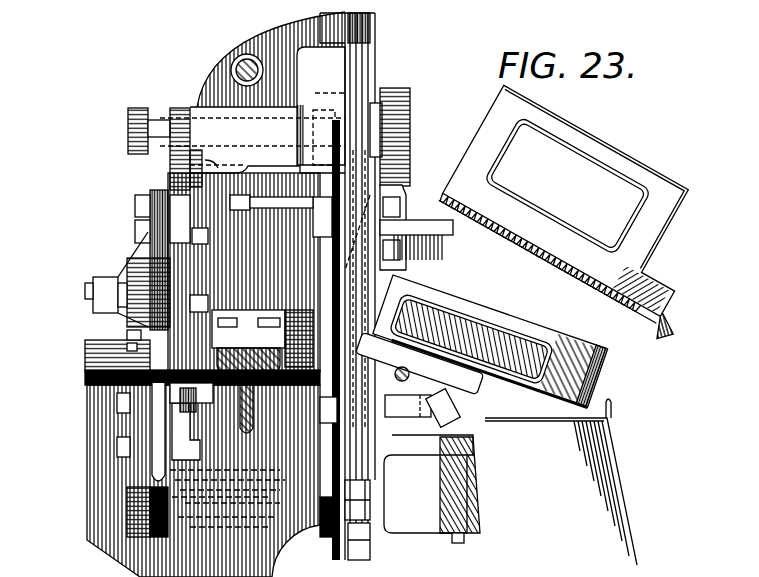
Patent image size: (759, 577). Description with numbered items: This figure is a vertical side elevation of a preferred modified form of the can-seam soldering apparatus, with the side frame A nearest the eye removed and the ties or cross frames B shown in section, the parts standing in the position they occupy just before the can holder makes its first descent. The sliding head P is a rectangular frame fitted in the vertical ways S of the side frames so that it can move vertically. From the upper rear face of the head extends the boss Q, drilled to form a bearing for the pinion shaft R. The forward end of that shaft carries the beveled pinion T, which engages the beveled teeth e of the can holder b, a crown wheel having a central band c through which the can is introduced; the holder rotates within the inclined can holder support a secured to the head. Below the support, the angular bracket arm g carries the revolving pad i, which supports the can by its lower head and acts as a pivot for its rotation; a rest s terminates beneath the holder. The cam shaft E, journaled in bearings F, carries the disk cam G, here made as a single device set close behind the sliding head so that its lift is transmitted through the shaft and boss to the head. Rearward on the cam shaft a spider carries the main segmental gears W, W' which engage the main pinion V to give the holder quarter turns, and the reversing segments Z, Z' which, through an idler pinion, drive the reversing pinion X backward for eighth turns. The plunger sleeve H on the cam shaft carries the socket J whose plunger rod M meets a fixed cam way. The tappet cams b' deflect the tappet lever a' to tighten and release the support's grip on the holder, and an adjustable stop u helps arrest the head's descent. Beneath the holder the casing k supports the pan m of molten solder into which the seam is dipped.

The side frame A is at (267, 88).
The ties or cross frames B is at (259, 58).
The vertical ways S is at (372, 32).
The sliding head P is at (376, 68).
The beveled pinion T is at (410, 118).
The pinion shaft R is at (252, 129).
The boss Q is at (229, 157).
The main pinion V is at (149, 120).
The reversing pinion X is at (180, 138).
The gear hub Y' is at (176, 168).
The reversing segment Z' is at (179, 219).
The reversing segment Z is at (281, 212).
The tappet lever a' is at (244, 213).
The main segmental gear W is at (134, 338).
The main segmental gear W' is at (144, 527).
The plunger rod M is at (86, 289).
The socket J is at (110, 295).
The plunger sleeve H is at (92, 340).
The feed block O is at (427, 498).
The can holder b is at (409, 314).
The tappet cam b' is at (198, 346).
The adjusting screw h' is at (198, 356).
The bearing F is at (262, 338).
The cam shaft E is at (254, 415).
The disk cam G is at (326, 342).
The adjustable stop u is at (357, 520).
The beveled teeth e is at (431, 175).
The central band c is at (548, 241).
The can holder support a is at (482, 349).
The rest s is at (422, 391).
The angular bracket arm g is at (418, 417).
The revolving pad i is at (480, 427).
The pan m is at (593, 410).
The casing k is at (544, 500).